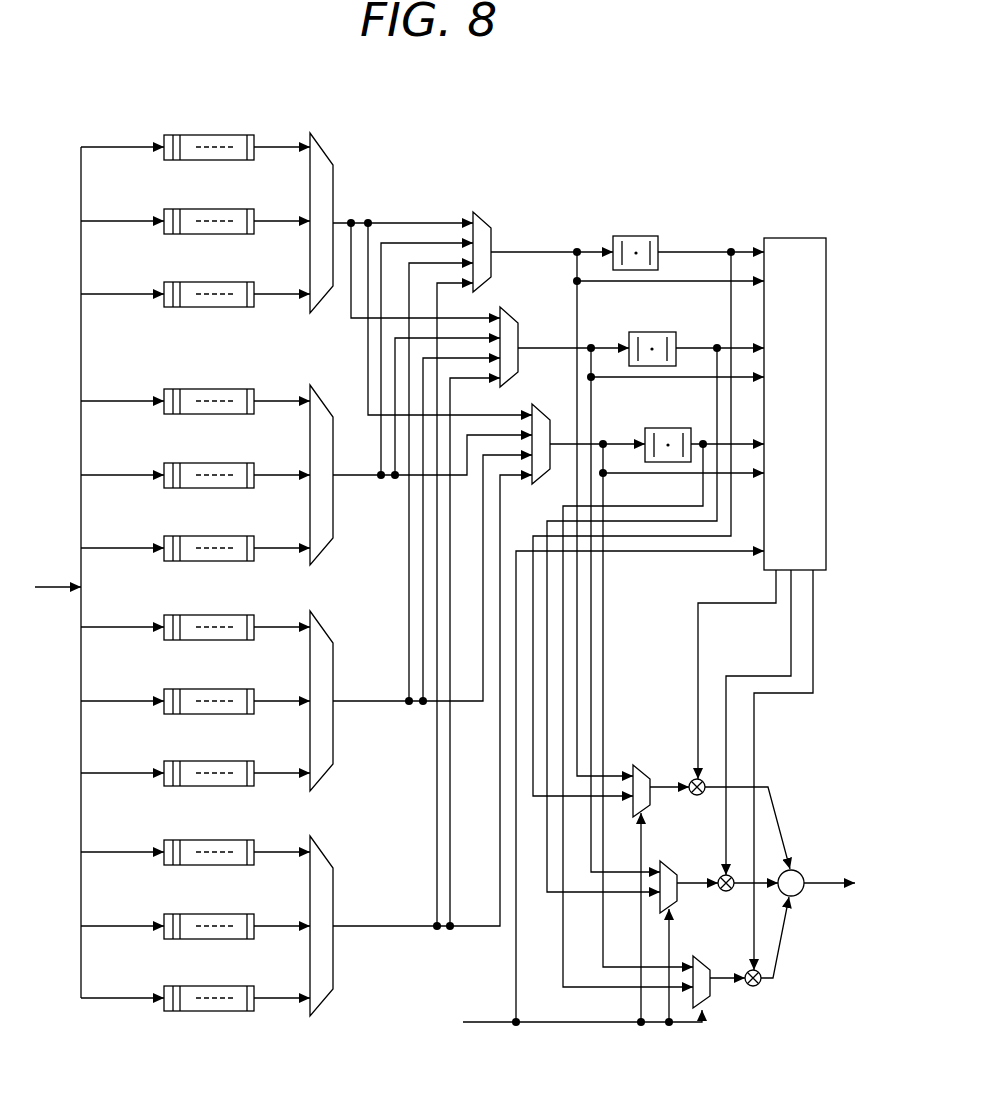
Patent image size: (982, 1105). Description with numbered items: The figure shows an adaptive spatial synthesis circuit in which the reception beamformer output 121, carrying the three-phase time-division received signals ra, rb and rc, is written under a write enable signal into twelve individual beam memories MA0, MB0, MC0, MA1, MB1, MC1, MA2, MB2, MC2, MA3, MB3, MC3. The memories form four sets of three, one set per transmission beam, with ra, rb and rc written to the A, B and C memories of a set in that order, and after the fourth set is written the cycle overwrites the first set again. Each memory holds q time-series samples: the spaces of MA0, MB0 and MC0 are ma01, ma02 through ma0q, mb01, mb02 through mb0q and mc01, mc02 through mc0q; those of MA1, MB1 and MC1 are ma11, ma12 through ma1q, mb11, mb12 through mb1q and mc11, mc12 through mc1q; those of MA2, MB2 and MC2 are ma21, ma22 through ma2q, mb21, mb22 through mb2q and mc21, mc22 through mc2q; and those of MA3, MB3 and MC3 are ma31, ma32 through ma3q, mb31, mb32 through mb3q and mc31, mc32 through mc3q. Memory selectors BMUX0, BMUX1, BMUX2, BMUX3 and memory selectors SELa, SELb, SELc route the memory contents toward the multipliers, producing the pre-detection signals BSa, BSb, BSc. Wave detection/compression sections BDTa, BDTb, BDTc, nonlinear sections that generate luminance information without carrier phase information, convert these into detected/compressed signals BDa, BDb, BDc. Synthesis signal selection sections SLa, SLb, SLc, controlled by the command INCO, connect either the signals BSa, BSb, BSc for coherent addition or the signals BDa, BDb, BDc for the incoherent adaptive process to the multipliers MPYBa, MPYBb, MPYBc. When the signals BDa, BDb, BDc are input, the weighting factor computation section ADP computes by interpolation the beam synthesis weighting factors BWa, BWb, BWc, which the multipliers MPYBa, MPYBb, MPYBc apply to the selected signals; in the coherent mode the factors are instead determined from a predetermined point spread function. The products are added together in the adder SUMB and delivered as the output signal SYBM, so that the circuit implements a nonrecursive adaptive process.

The reception beamformer output 121 is at (45, 592).
The individual beam memory MA0 is at (195, 132).
The individual beam memory MB0 is at (195, 206).
The individual beam memory MC0 is at (195, 279).
The individual beam memory MA1 is at (195, 386).
The individual beam memory MB1 is at (195, 460).
The individual beam memory MC1 is at (195, 533).
The individual beam memory MA2 is at (195, 612).
The individual beam memory MB2 is at (195, 686).
The individual beam memory MC2 is at (195, 758).
The individual beam memory MA3 is at (195, 837).
The individual beam memory MB3 is at (195, 911).
The individual beam memory MC3 is at (195, 983).
The memory space ma01 is at (180, 127).
The memory space ma02 is at (207, 136).
The memory space ma0q is at (262, 127).
The memory space mb01 is at (180, 201).
The memory space mb02 is at (207, 210).
The memory space mb0q is at (262, 201).
The memory space mc01 is at (180, 274).
The memory space mc02 is at (207, 283).
The memory space mc0q is at (262, 274).
The memory space ma11 is at (180, 381).
The memory space ma12 is at (207, 390).
The memory space ma1q is at (262, 381).
The memory space mb11 is at (180, 455).
The memory space mb12 is at (207, 464).
The memory space mb1q is at (262, 455).
The memory space mc11 is at (180, 528).
The memory space mc12 is at (207, 537).
The memory space mc1q is at (262, 528).
The memory space ma21 is at (180, 607).
The memory space ma22 is at (207, 616).
The memory space ma2q is at (262, 607).
The memory space mb21 is at (180, 681).
The memory space mb22 is at (207, 690).
The memory space mb2q is at (262, 681).
The memory space mc21 is at (180, 753).
The memory space mc22 is at (207, 762).
The memory space mc2q is at (262, 753).
The memory space ma31 is at (180, 832).
The memory space ma32 is at (207, 841).
The memory space ma3q is at (262, 832).
The memory space mb31 is at (180, 906).
The memory space mb32 is at (207, 915).
The memory space mb3q is at (262, 906).
The memory space mc31 is at (180, 978).
The memory space mc32 is at (207, 987).
The memory space mc3q is at (262, 978).
The memory selector BMUX0 is at (330, 208).
The memory selector BMUX1 is at (330, 460).
The memory selector BMUX2 is at (330, 686).
The memory selector BMUX3 is at (330, 911).
The memory selector SELa is at (492, 204).
The memory selector SELb is at (519, 301).
The memory selector SELc is at (556, 398).
The pre-detection signal BSa is at (536, 243).
The pre-detection signal BSb is at (536, 346).
The pre-detection signal BSc is at (563, 447).
The wave detection/compression section BDTa is at (613, 237).
The wave detection/compression section BDTb is at (628, 333).
The wave detection/compression section BDTc is at (645, 429).
The detected/compressed signal BDa is at (696, 250).
The detected/compressed signal BDb is at (704, 347).
The detected/compressed signal BDc is at (712, 443).
The weighting factor computation section ADP is at (794, 236).
The beam synthesis weighting factor BWa is at (698, 625).
The beam synthesis weighting factor BWb is at (791, 644).
The beam synthesis weighting factor BWc is at (755, 740).
The synthesis signal selection section SLa is at (654, 756).
The synthesis signal selection section SLb is at (683, 851).
The synthesis signal selection section SLc is at (716, 947).
The multiplier MPYBa is at (691, 779).
The multiplier MPYBb is at (732, 877).
The multiplier MPYBc is at (751, 988).
The adder SUMB is at (800, 897).
The output signal SYBM is at (830, 885).
The command INCO is at (587, 791).